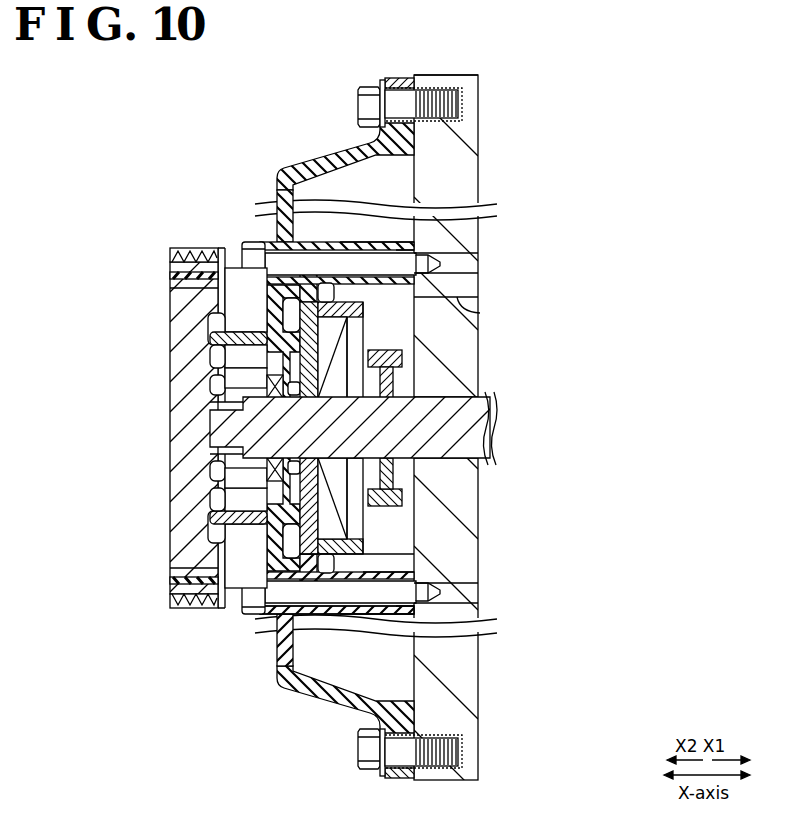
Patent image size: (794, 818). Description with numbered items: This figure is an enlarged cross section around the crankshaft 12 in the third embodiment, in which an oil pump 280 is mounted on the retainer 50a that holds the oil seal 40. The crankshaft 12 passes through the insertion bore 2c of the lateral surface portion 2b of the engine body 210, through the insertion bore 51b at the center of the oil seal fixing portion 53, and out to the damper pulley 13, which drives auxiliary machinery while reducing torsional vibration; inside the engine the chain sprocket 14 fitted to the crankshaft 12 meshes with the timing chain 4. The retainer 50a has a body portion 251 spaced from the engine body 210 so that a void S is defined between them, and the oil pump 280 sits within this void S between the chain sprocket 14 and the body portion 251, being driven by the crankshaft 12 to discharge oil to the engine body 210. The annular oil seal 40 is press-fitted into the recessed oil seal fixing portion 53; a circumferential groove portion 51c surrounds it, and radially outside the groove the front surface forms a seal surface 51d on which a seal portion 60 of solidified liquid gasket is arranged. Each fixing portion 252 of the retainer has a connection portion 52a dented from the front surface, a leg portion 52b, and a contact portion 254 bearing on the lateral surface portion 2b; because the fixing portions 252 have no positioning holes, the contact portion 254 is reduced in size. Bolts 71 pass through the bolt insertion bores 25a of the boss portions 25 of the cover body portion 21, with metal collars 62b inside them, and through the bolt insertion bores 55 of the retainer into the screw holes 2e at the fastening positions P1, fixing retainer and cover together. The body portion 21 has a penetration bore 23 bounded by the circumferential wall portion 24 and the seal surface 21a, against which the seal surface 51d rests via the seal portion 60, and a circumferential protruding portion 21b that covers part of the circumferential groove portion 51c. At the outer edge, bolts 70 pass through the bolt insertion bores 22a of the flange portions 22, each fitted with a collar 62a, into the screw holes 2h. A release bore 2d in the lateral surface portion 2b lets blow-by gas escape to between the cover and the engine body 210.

The engine body 210 is at (491, 65).
The lateral surface portion 2b is at (470, 170).
The flange portions 22 is at (470, 137).
The body portion 21 is at (277, 197).
The collar 62a is at (480, 80).
The bolts 70 is at (368, 111).
The bolt insertion bores 22a is at (360, 96).
The screw holes 2h is at (480, 106).
The fixing portions 252 is at (349, 246).
The cover plate 50a is at (470, 660).
The leg portion 52b is at (355, 242).
The fastening positions P1 is at (399, 241).
The contact portion 254 is at (478, 240).
The boss portions 25 is at (246, 234).
The bolt insertion bore 25a is at (243, 250).
The screw holes 2e is at (470, 256).
The release bore 2d is at (470, 310).
The oil pump 280 is at (470, 318).
The insertion bore 2c is at (470, 448).
The damper pulley 13 is at (178, 453).
The bolts 71 is at (183, 262).
The collar 62b is at (176, 285).
The connection portion 52a is at (176, 303).
The seal surface 51d is at (222, 340).
The penetration bore 23 is at (250, 350).
The circumferential groove portion 51c is at (240, 364).
The oil seal 40 is at (235, 383).
The oil seal fixing portion 53 is at (225, 405).
The circumferential protruding portion 21b is at (250, 482).
The seal portion 60 is at (250, 505).
The circumferential wall portion 24 is at (255, 518).
The insertion bore 51b is at (470, 382).
The chain sprocket 14 is at (470, 468).
The bolt insertion bore 55 is at (390, 274).
The body portion 251 is at (470, 347).
The timing chain 4 is at (470, 495).
The seal surface 21a is at (345, 548).
The void S is at (393, 569).
The crankshaft 12 is at (470, 413).